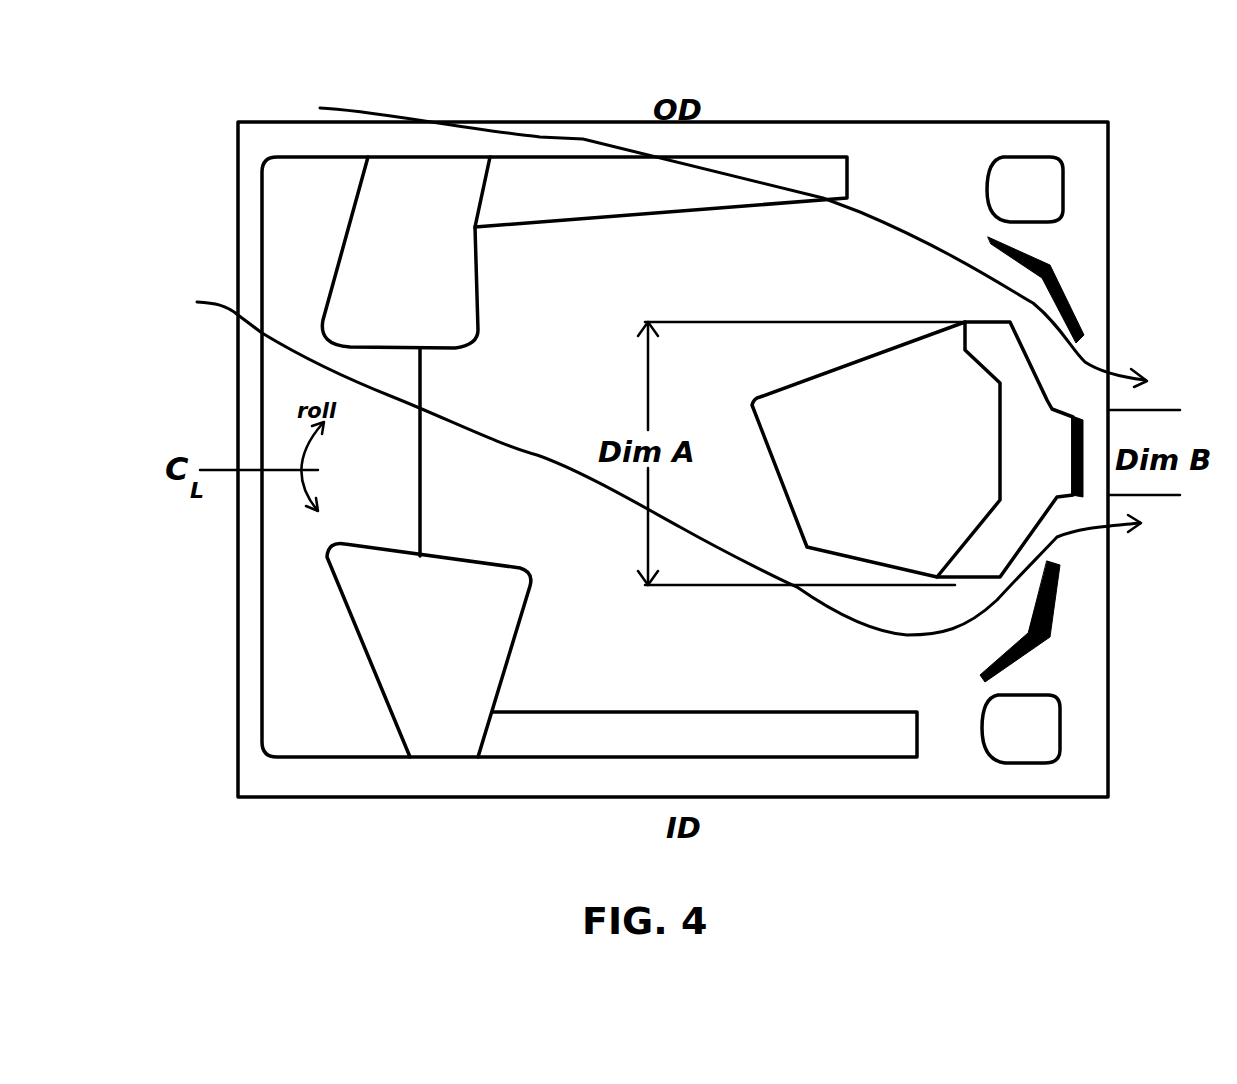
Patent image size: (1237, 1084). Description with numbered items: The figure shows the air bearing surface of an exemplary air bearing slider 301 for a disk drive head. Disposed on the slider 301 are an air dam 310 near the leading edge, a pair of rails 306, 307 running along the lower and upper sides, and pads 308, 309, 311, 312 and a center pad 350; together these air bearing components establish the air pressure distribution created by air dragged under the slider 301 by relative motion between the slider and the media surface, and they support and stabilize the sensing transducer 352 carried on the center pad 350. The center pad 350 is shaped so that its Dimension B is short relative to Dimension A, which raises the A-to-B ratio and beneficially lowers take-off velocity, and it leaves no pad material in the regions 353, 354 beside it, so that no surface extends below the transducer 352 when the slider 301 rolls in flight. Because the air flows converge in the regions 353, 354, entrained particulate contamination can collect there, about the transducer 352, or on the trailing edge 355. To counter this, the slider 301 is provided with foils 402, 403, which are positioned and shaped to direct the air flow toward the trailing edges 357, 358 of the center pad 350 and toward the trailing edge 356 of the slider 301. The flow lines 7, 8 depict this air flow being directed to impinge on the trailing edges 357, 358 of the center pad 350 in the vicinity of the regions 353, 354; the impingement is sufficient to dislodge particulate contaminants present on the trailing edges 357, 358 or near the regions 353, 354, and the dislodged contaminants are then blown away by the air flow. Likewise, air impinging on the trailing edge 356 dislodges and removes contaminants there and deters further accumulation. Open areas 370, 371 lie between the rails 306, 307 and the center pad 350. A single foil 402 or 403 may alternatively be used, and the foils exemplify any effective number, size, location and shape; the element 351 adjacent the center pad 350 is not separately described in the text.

The flow line 7 is at (725, 242).
The flow line 8 is at (660, 465).
The air bearing slider 301 is at (348, 798).
The rail 306 is at (697, 734).
The rail 307 is at (661, 192).
The pad 308 is at (429, 650).
The pad 309 is at (406, 252).
The air dam 310 is at (370, 457).
The pad 311 is at (1025, 189).
The pad 312 is at (1021, 729).
The center pad 350 is at (876, 449).
The valve element tip 351 is at (1010, 449).
The transducer 352 is at (1100, 447).
The region 353 is at (1046, 536).
The region 354 is at (1054, 382).
The trailing edge 355 is at (237, 547).
The trailing edge of slider 356 is at (1110, 562).
The trailing edge of pad 357 is at (1027, 543).
The trailing edge of pad 358 is at (1047, 398).
The upper chamber 370 is at (845, 272).
The lower chamber 371 is at (675, 648).
The foil 402 is at (1080, 285).
The foil 403 is at (1060, 613).